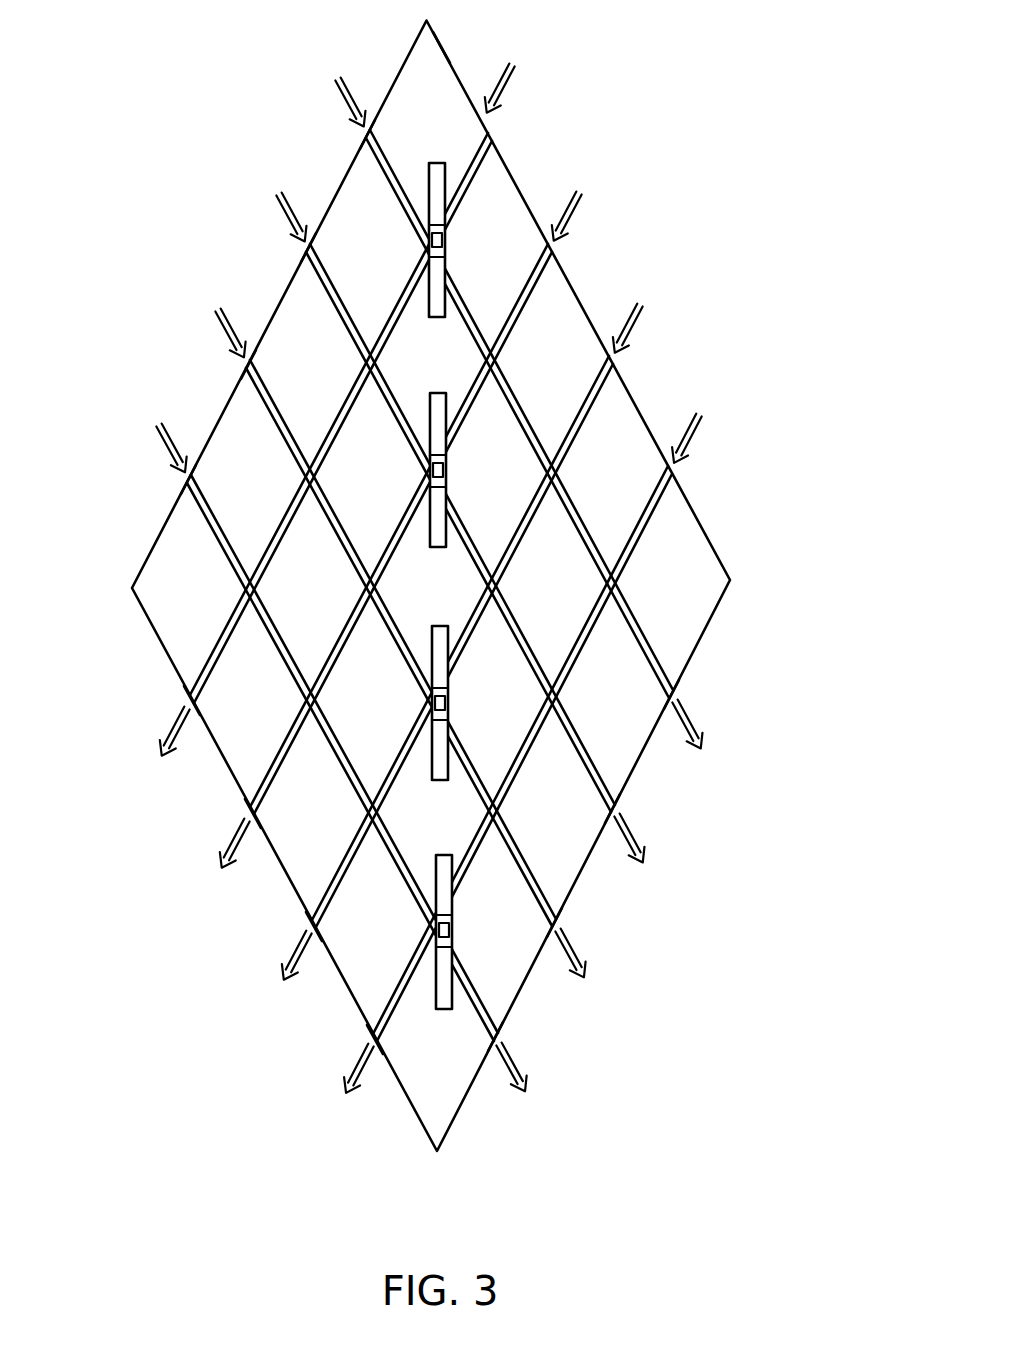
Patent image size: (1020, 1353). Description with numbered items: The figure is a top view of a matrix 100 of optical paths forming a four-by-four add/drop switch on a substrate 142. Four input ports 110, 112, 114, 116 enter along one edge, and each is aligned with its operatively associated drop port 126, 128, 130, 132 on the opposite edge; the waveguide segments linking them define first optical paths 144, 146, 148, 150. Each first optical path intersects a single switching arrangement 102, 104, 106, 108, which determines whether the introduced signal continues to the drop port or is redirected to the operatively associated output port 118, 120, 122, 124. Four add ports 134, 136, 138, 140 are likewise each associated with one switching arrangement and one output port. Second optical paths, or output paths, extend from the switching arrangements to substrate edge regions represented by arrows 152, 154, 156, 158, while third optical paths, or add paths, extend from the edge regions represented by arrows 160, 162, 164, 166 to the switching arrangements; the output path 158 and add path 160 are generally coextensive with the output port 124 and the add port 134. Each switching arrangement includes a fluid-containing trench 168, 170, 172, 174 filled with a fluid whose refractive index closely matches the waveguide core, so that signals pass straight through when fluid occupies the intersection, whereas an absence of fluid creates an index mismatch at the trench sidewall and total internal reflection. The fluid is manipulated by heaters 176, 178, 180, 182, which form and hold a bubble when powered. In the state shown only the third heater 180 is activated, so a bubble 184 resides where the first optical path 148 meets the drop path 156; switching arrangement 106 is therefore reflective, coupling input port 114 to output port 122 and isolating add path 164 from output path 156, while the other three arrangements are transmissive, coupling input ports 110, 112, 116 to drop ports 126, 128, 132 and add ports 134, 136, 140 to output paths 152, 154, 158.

The matrix of optical paths 100 is at (672, 91).
The switching arrangement 102 is at (418, 265).
The switching arrangement 104 is at (426, 483).
The switching arrangement 106 is at (421, 723).
The switching arrangement 108 is at (430, 957).
The input port 110 is at (371, 139).
The input port 112 is at (307, 246).
The input port 114 is at (249, 366).
The input port 116 is at (189, 480).
The output port 118 is at (193, 687).
The output port 120 is at (257, 793).
The output port 122 is at (320, 913).
The output port 124 is at (380, 1038).
The drop port 126 is at (684, 690).
The drop port 128 is at (623, 802).
The drop port 130 is at (560, 919).
The drop port 132 is at (492, 1037).
The add port 134 is at (483, 139).
The add port 136 is at (546, 258).
The add port 138 is at (598, 390).
The add port 140 is at (670, 493).
The substrate 142 is at (440, 47).
The first optical path 144 is at (574, 500).
The first optical path 146 is at (512, 612).
The first optical path 148 is at (388, 612).
The first optical path 150 is at (263, 612).
The second optical path 152 is at (172, 715).
The second optical path 154 is at (237, 837).
The second optical path 156 is at (298, 948).
The second optical path 158 is at (352, 1085).
The third optical path 160 is at (517, 88).
The third optical path 162 is at (575, 214).
The third optical path 164 is at (633, 325).
The third optical path 166 is at (692, 440).
The fluid-containing trench 168 is at (432, 312).
The fluid-containing trench 170 is at (436, 530).
The fluid-containing trench 172 is at (437, 768).
The fluid-containing trench 174 is at (440, 1007).
The heater 176 is at (430, 240).
The heater 178 is at (431, 470).
The heater 180 is at (430, 703).
The heater 182 is at (434, 933).
The bubble 184 is at (432, 718).